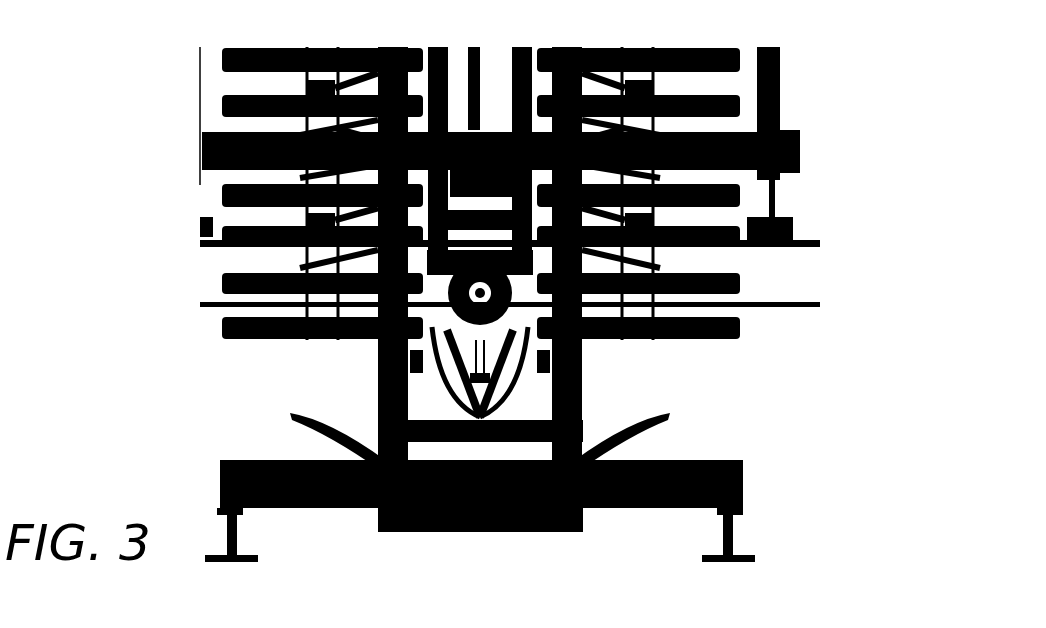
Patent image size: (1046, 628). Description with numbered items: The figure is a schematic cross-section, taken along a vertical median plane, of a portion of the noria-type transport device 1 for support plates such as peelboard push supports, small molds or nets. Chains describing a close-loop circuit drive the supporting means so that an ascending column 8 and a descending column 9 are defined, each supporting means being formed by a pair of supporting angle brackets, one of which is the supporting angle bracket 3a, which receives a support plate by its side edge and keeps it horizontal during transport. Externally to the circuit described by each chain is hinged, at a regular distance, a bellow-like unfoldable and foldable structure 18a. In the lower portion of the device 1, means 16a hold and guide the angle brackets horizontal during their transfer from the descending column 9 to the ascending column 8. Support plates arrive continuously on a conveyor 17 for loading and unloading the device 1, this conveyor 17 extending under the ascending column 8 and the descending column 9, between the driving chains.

The transport device 1 is at (168, 204).
The ascending column 8 is at (238, 82).
The descending column 9 is at (740, 87).
The conveyor 17 is at (806, 238).
The supporting angle bracket 3a is at (208, 328).
The bellow-like unfoldable and foldable structure 18a is at (510, 370).
The means for holding and guiding 16a is at (668, 434).